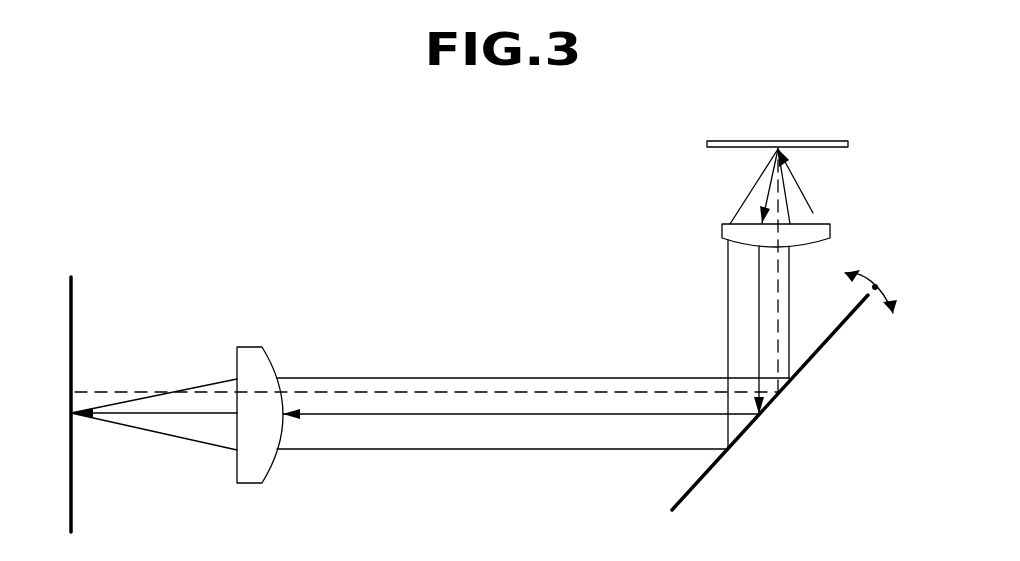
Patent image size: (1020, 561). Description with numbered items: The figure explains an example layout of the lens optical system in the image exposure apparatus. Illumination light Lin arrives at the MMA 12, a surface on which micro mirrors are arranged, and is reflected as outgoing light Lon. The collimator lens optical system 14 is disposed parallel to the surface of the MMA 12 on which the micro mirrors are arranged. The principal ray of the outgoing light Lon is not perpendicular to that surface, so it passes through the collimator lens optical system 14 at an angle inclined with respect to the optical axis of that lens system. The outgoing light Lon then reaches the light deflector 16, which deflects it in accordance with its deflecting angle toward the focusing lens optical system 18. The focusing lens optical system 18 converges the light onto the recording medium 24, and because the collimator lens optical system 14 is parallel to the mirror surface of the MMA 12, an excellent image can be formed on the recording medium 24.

The MMA 12 is at (705, 143).
The collimator lens optical system 14 is at (720, 228).
The light deflector 16 is at (833, 337).
The focusing lens optical system 18 is at (243, 345).
The recording medium 24 is at (73, 310).
The outgoing light Lon is at (753, 185).
The incident light beam Lin is at (805, 190).